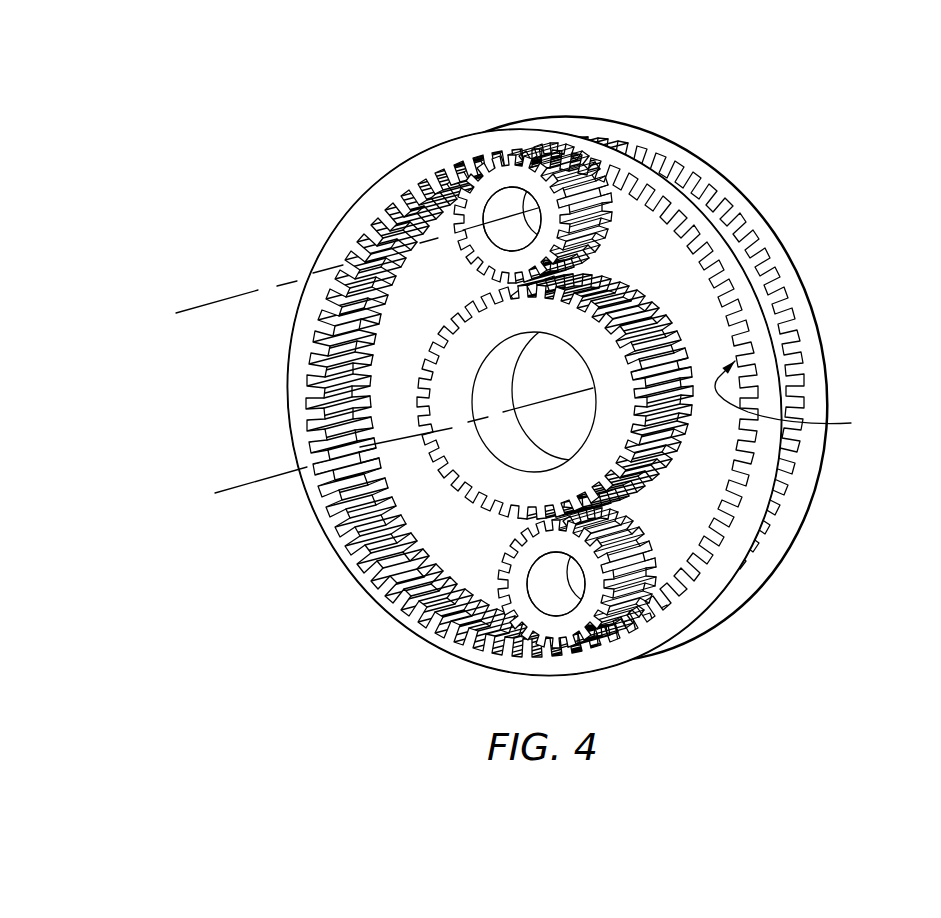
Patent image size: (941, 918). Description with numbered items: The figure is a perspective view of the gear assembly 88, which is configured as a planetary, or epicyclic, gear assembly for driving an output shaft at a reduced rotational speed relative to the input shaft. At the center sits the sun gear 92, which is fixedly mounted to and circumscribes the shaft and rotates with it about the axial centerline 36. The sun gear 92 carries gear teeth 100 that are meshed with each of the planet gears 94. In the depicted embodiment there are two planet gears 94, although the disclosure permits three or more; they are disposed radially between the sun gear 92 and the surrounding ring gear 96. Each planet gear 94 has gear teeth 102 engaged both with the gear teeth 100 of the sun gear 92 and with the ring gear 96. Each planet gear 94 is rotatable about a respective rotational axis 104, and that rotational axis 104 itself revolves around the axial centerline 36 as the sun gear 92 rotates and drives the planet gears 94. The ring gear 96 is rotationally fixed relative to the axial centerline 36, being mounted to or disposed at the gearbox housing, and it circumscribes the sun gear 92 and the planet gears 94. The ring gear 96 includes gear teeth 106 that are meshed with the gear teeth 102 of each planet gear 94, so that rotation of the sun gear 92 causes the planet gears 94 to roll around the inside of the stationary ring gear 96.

The gear assembly 88 is at (728, 148).
The ring gear 96 is at (747, 297).
The sun gear 92 is at (690, 461).
The planet gears 94 is at (520, 178).
The gear teeth 102 is at (615, 217).
The gear teeth 100 is at (620, 407).
The gear teeth 106 is at (805, 399).
The rotational axis 104 is at (240, 293).
The axial centerline 36 is at (238, 487).